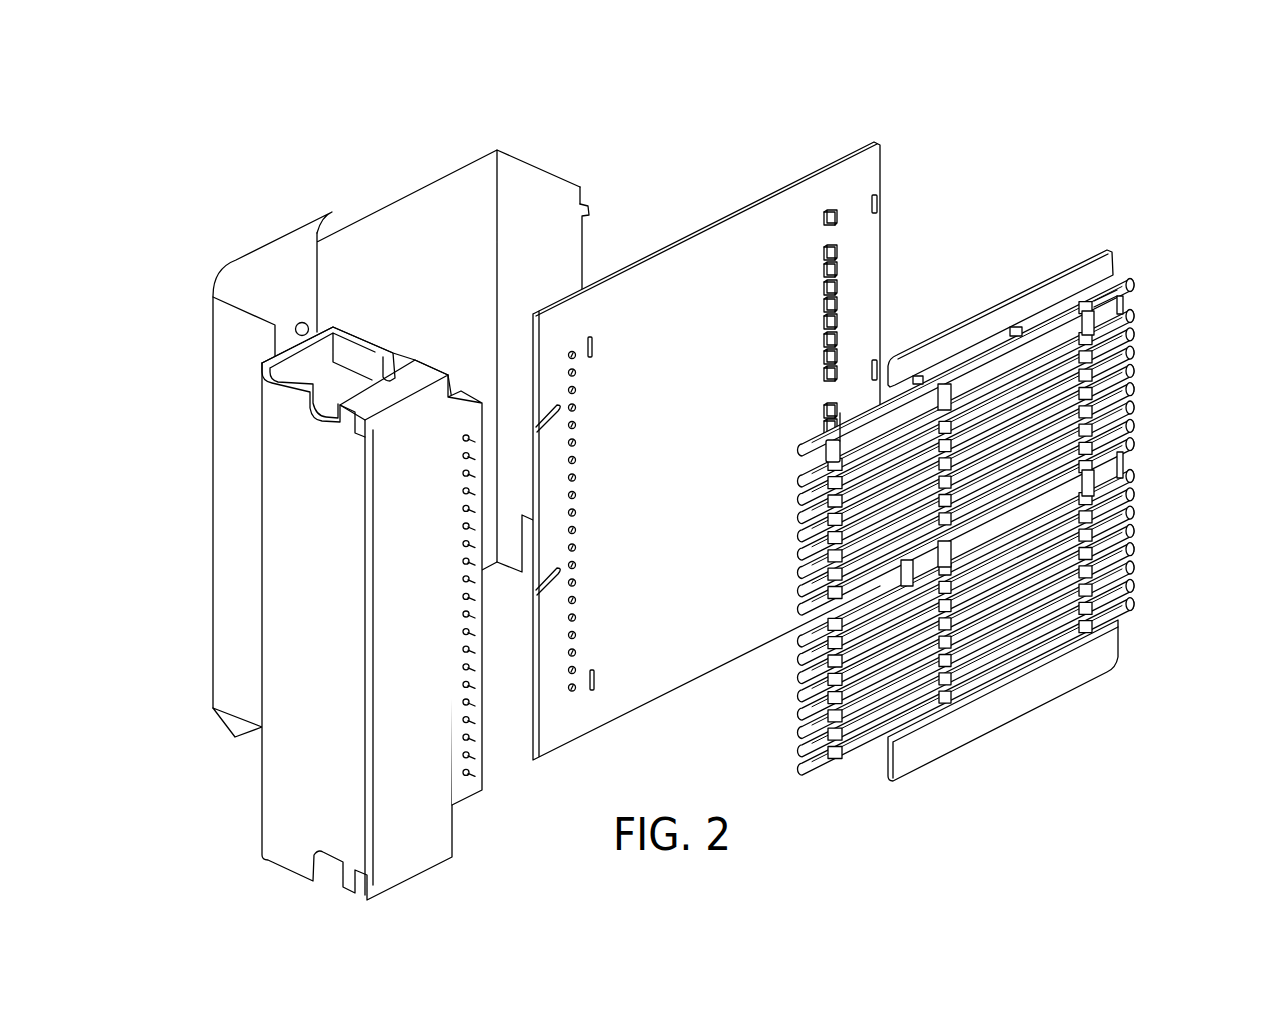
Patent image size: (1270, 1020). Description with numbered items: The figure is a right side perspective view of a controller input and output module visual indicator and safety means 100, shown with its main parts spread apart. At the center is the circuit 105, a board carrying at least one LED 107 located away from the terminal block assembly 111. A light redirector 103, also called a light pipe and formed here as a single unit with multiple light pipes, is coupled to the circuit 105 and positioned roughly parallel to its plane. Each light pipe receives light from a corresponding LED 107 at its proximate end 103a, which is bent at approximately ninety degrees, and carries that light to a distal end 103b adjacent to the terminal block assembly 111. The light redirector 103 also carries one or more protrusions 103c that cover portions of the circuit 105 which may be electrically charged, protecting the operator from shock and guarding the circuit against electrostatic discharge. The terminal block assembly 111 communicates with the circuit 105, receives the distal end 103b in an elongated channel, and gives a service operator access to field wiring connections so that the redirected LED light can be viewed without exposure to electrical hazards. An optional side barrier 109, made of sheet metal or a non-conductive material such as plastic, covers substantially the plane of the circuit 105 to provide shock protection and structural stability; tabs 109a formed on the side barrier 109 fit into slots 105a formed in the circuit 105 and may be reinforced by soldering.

The controller input and output module visual indicator and safety means 100 is at (1010, 175).
The light redirector 103 is at (967, 488).
The proximate end 103a is at (1134, 353).
The distal end 103b is at (800, 542).
The protrusion 103c is at (1108, 250).
The circuit 105 is at (686, 235).
The slots 105a is at (878, 207).
The LED 107 is at (838, 292).
The side barrier 109 is at (395, 188).
The tabs 109a is at (591, 215).
The terminal block assembly 111 is at (262, 778).